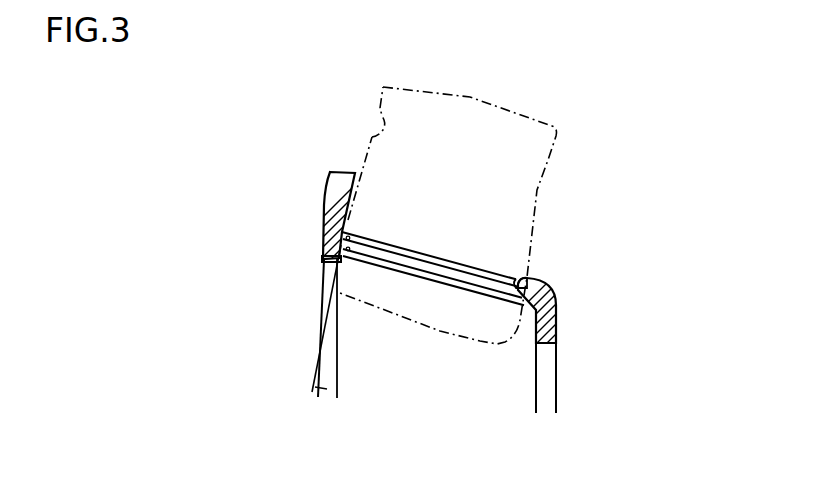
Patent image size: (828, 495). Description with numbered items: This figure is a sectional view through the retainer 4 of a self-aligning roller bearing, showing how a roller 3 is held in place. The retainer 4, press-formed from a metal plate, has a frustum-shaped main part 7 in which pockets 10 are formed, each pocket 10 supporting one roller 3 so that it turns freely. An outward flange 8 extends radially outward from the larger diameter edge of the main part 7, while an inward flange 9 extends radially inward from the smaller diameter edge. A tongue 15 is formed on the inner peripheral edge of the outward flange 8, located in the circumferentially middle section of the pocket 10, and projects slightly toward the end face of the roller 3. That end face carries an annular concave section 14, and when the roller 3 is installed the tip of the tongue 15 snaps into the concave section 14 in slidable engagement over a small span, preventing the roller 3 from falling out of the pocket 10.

The roller 3 is at (540, 188).
The concave section 14 is at (372, 132).
The outward flange 8 is at (332, 175).
The tongue 15 is at (326, 268).
The main part 7 is at (480, 268).
The pocket 10 is at (515, 277).
The retainer 4 is at (556, 308).
The inward flange 9 is at (556, 336).